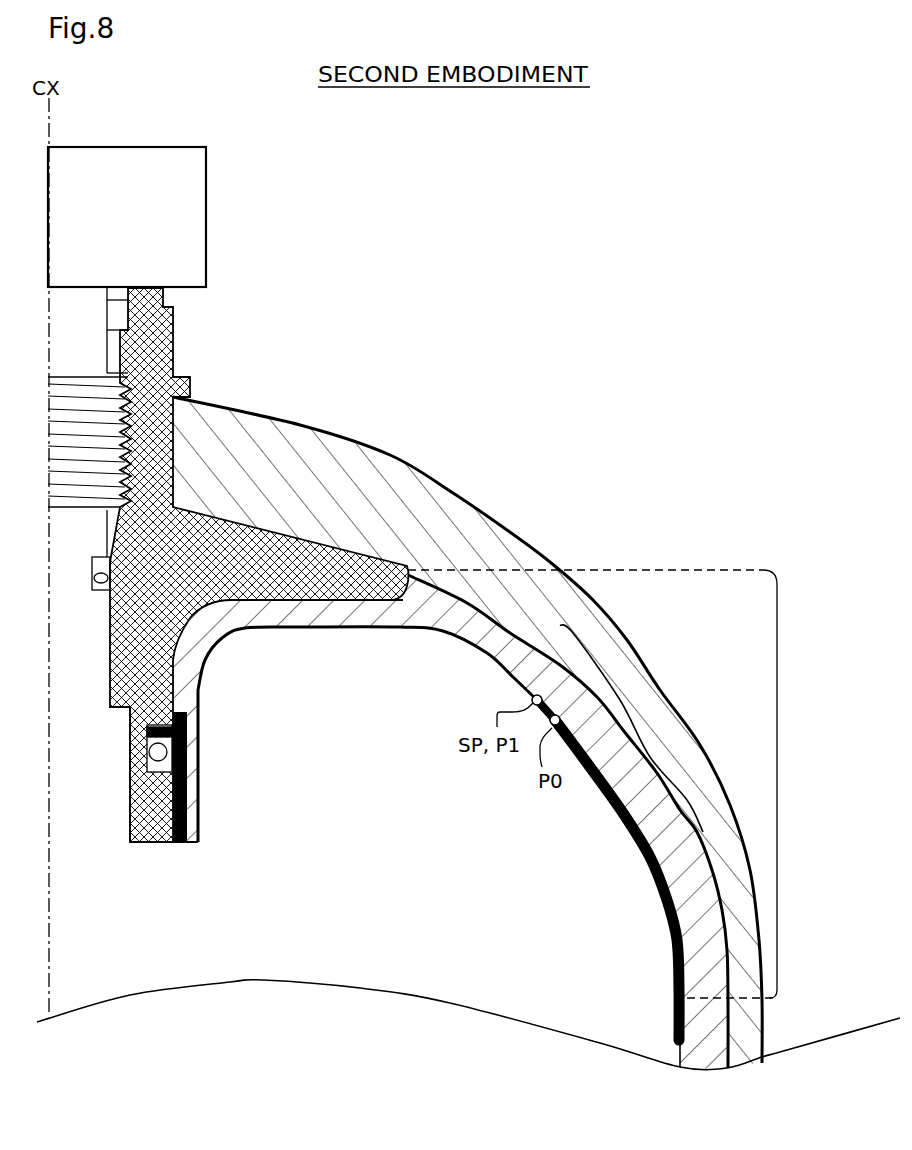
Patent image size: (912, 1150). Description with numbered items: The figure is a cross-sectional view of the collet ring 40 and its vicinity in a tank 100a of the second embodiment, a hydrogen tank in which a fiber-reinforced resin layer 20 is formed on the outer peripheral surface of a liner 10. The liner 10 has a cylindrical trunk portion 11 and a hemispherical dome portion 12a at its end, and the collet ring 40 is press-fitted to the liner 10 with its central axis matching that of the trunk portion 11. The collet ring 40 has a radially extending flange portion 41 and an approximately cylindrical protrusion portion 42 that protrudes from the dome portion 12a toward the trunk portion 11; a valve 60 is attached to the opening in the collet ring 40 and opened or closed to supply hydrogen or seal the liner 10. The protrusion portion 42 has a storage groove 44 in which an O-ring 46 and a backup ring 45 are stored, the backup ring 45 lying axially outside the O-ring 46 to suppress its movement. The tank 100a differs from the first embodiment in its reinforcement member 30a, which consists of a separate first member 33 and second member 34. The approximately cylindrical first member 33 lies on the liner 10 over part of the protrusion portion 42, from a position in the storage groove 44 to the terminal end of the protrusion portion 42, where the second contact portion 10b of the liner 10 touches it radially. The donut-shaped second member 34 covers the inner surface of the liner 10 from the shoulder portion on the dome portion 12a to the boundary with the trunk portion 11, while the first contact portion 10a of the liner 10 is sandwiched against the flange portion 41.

The liner 10 is at (628, 727).
The first contact portion 10a is at (265, 609).
The second contact portion 10b is at (200, 832).
The trunk portion 11 is at (773, 1000).
The dome portion 12a is at (777, 785).
The fiber-reinforced resin layer 20 is at (660, 755).
The reinforcement member 30a is at (643, 458).
The first member 33 is at (200, 804).
The second member 34 is at (600, 753).
The collet ring 40 is at (290, 516).
The flange portion 41 is at (210, 543).
The protrusion portion 42 is at (147, 647).
The storage groove 44 is at (143, 773).
The backup ring 45 is at (140, 735).
The O-ring 46 is at (140, 757).
The valve 60 is at (162, 220).
The tank 100a is at (556, 195).